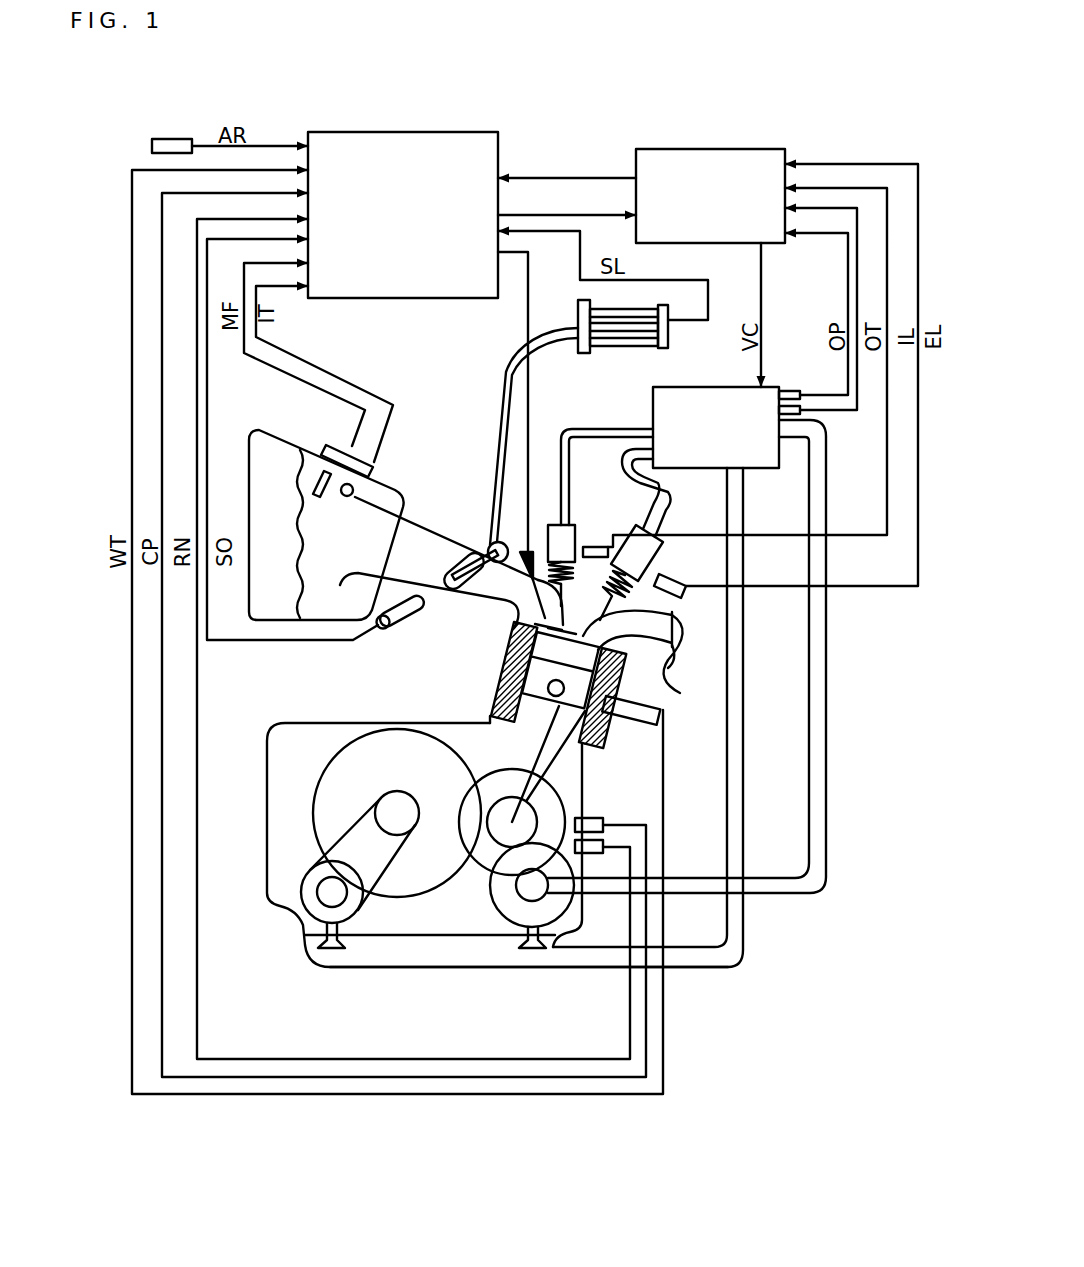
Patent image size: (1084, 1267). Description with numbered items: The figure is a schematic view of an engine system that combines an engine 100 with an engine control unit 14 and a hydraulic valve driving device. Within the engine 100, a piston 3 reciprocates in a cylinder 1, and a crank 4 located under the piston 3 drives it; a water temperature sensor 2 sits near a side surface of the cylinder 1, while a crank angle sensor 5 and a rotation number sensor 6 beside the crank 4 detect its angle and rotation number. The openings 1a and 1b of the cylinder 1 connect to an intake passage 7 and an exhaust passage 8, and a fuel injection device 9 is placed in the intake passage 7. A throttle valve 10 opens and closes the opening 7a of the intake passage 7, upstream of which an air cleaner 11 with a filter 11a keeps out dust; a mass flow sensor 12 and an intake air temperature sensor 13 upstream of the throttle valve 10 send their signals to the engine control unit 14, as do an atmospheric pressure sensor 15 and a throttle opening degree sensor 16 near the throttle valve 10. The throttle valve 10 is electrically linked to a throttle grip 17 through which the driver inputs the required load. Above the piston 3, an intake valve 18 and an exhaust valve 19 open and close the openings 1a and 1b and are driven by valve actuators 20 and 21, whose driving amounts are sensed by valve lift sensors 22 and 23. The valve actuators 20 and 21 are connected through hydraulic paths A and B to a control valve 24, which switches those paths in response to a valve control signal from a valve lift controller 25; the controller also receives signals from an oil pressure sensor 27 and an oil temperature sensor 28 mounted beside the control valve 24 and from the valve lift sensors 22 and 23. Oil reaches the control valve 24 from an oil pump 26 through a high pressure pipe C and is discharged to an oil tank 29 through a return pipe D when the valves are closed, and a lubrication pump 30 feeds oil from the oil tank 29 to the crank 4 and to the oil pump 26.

The cylinder 1 is at (498, 697).
The opening 1a is at (520, 642).
The opening 1b is at (624, 678).
The water temperature sensor 2 is at (637, 718).
The piston 3 is at (542, 673).
The crank 4 is at (482, 862).
The crank angle sensor 5 is at (605, 820).
The rotation number sensor 6 is at (590, 854).
The intake passage 7 is at (437, 536).
The opening 7a is at (468, 556).
The exhaust passage 8 is at (675, 688).
The fuel injection device 9 is at (523, 555).
The throttle valve 10 is at (463, 588).
The air cleaner 11 is at (318, 623).
The filter 11a is at (297, 587).
The mass flow sensor 12 is at (322, 450).
The intake air temperature sensor 13 is at (354, 487).
The engine control unit 14 is at (468, 132).
The atmospheric pressure sensor 15 is at (173, 139).
The throttle opening degree sensor 16 is at (413, 607).
The throttle grip 17 is at (668, 337).
The intake valve 18 is at (540, 620).
The exhaust valve 19 is at (672, 628).
The valve actuator 20 is at (552, 525).
The valve actuator 21 is at (655, 560).
The valve lift sensor 22 is at (597, 546).
The valve lift sensor 23 is at (686, 592).
The control valve 24 is at (655, 387).
The valve lift controller 25 is at (740, 149).
The oil pump 26 is at (583, 927).
The oil pressure sensor 27 is at (797, 391).
The oil temperature sensor 28 is at (802, 416).
The oil tank 29 is at (303, 945).
The lubrication pump 30 is at (300, 893).
The engine 100 is at (469, 442).
The hydraulic path A is at (563, 432).
The hydraulic path B is at (672, 487).
The high pressure pipe C is at (826, 755).
The return pipe D is at (743, 755).